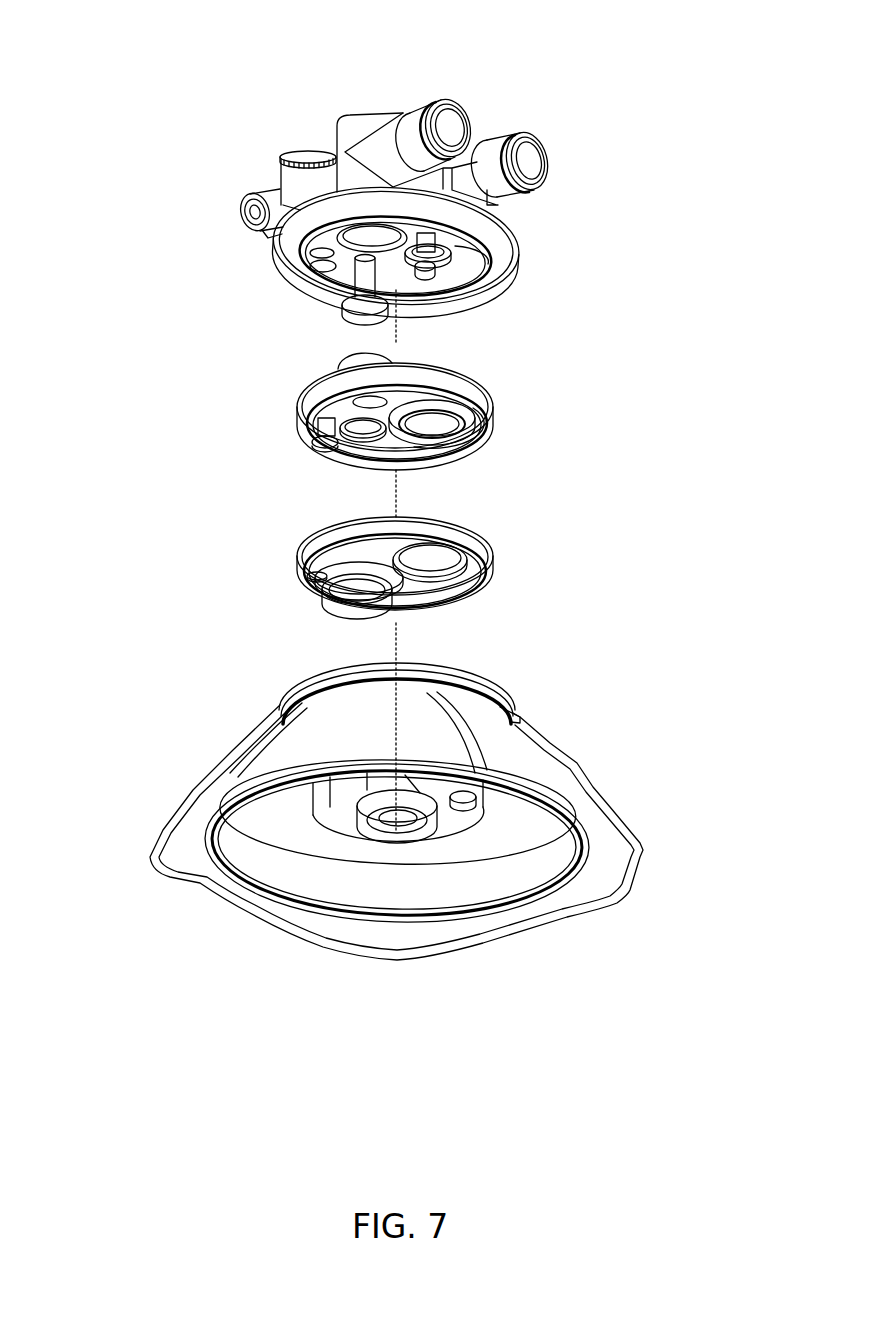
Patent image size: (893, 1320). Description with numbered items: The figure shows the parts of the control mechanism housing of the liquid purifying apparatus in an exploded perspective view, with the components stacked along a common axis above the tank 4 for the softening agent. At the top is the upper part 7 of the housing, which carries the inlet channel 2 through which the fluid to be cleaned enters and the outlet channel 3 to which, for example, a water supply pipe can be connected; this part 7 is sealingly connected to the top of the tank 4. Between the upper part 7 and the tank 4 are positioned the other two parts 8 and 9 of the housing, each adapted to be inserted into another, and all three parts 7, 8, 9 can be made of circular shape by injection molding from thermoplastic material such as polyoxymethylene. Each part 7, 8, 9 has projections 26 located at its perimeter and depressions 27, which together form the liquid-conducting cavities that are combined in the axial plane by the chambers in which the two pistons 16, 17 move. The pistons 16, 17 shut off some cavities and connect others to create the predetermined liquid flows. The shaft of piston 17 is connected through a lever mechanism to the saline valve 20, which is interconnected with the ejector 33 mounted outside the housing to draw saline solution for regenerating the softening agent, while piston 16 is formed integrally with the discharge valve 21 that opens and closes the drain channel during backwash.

The inlet channel 2 is at (527, 160).
The outlet channel 3 is at (448, 128).
The tank for softening agent 4 is at (605, 866).
The part of the housing 7 is at (495, 222).
The part of the housing 8 is at (472, 390).
The part of the housing 9 is at (482, 547).
The piston 16 is at (440, 260).
The piston 17 is at (365, 312).
The saline valve 20 is at (252, 213).
The discharge valve 21 is at (428, 270).
The projections 26 is at (305, 262).
The depressions 27 is at (403, 275).
The ejector 33 is at (286, 157).